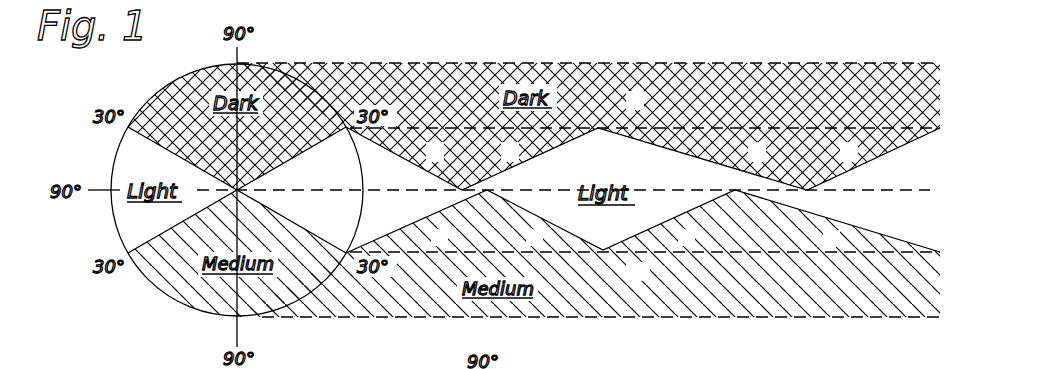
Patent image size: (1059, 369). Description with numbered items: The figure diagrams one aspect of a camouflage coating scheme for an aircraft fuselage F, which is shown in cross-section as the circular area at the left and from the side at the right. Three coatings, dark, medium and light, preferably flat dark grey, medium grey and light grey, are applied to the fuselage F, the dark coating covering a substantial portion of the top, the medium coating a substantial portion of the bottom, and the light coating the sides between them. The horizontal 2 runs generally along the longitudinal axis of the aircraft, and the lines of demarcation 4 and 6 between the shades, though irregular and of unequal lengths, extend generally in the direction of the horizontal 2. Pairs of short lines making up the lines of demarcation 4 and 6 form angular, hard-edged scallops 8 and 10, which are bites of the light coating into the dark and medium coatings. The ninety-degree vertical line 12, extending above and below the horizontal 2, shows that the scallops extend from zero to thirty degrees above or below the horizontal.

The horizontal 2 is at (97, 192).
The line of demarcation 4 is at (444, 176).
The line of demarcation 6 is at (437, 216).
The scallop 8 is at (621, 127).
The scallop 10 is at (619, 252).
The vertical line 12 is at (236, 333).
The fuselage F is at (156, 84).